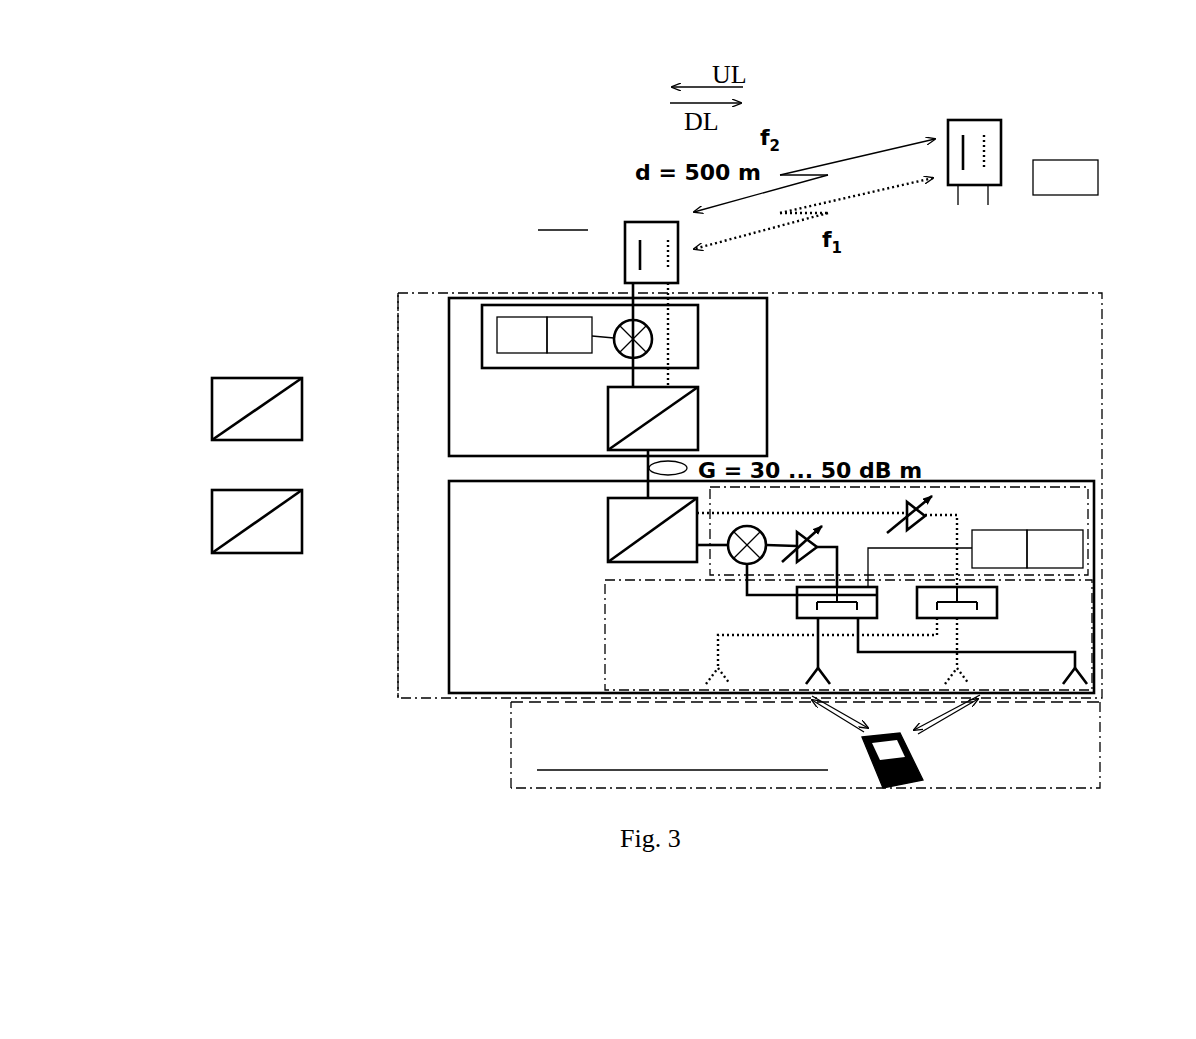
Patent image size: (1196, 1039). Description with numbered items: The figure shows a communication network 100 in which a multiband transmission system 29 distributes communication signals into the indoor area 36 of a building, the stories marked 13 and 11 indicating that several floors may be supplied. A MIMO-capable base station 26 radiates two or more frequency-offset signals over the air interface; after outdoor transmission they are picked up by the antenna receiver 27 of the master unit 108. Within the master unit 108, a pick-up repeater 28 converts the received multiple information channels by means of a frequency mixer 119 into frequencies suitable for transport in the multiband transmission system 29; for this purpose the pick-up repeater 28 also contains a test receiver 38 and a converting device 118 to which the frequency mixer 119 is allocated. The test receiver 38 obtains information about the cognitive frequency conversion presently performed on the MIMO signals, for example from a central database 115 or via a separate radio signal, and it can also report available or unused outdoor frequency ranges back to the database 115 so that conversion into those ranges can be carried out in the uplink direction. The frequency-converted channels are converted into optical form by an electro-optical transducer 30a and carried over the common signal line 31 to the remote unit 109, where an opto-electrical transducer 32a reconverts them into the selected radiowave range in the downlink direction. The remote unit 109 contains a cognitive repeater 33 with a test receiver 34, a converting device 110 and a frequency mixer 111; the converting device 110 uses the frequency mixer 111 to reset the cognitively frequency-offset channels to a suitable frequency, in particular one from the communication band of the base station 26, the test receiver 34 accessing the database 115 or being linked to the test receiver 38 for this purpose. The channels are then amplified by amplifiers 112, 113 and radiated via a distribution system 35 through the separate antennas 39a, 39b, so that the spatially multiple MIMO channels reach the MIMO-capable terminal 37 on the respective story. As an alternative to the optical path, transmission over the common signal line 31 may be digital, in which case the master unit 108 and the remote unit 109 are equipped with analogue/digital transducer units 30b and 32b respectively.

The communication network 100 is at (382, 88).
The base station, MIMO-capable 26 is at (990, 120).
The database 115 is at (1080, 161).
The antenna receiver 27 is at (633, 221).
The 13th floor 13 is at (490, 227).
The master unit 108 is at (449, 354).
The pick-up repeater 28 is at (482, 343).
The test receiver 38 is at (528, 318).
The converting device 118 is at (572, 320).
The frequency mixer 119 is at (655, 340).
The electro-optical transducer unit 30a is at (705, 425).
The analogue/digital transducer unit 30b is at (212, 410).
The common signal line 31 is at (640, 475).
The multiband transmission system 29 is at (396, 526).
The remote unit 109 is at (1100, 577).
The opto-electrical transducer unit 32a is at (604, 527).
The analogue/digital transducer unit 32b is at (212, 525).
The frequency mixer 111 is at (740, 562).
The amplifier 112 is at (822, 545).
The amplifier 113 is at (924, 500).
The repeater, terminal side, converter 33 is at (995, 487).
The converting device 110 is at (1000, 537).
The test receiver 34 is at (1085, 537).
The distribution system 35 is at (592, 648).
The antenna 39a is at (794, 657).
The antenna 39b is at (842, 657).
The indoor area 36 is at (505, 745).
The multiplexer 11 is at (597, 767).
The terminal, MIMO-capable 37 is at (862, 760).